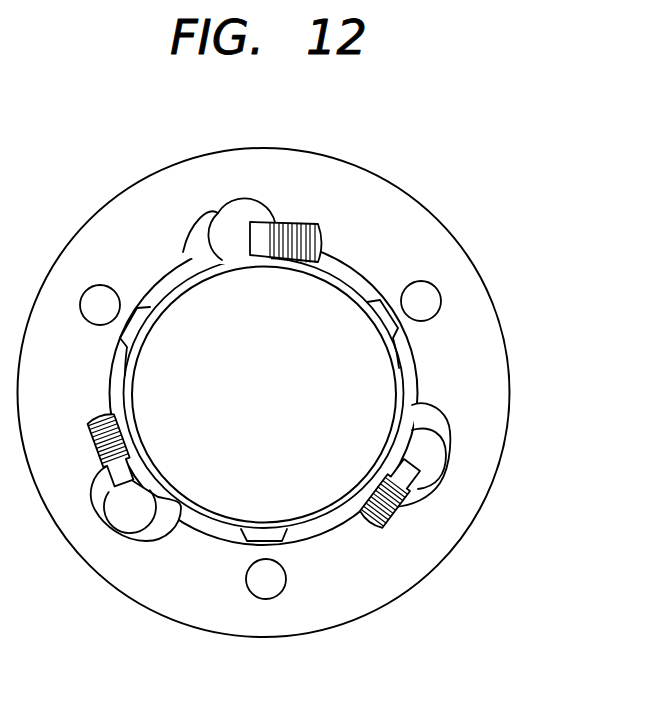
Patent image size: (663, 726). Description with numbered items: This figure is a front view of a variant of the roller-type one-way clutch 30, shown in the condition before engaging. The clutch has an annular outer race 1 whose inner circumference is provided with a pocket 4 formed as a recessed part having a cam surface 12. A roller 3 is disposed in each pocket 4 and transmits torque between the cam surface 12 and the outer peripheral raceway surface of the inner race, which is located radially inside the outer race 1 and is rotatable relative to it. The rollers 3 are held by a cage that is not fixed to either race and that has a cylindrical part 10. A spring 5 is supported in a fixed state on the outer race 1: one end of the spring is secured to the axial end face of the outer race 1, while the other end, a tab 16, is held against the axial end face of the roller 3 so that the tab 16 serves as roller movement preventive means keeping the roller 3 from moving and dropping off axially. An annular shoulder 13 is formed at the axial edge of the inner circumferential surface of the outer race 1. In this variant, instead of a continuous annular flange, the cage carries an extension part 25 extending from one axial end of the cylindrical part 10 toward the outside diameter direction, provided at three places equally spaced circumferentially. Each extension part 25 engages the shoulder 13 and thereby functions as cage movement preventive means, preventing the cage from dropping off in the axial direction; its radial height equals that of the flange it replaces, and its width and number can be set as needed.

The outer race 1 is at (478, 316).
The roller-type one-way clutch 30 is at (292, 393).
The cylindrical part 10 is at (167, 481).
The shoulder 13 is at (203, 527).
The extension part 25 is at (264, 531).
The cam surface 12 is at (227, 225).
The pocket 4 is at (203, 220).
The roller 3 is at (232, 244).
The spring 5 is at (320, 225).
The tab 16 is at (257, 248).